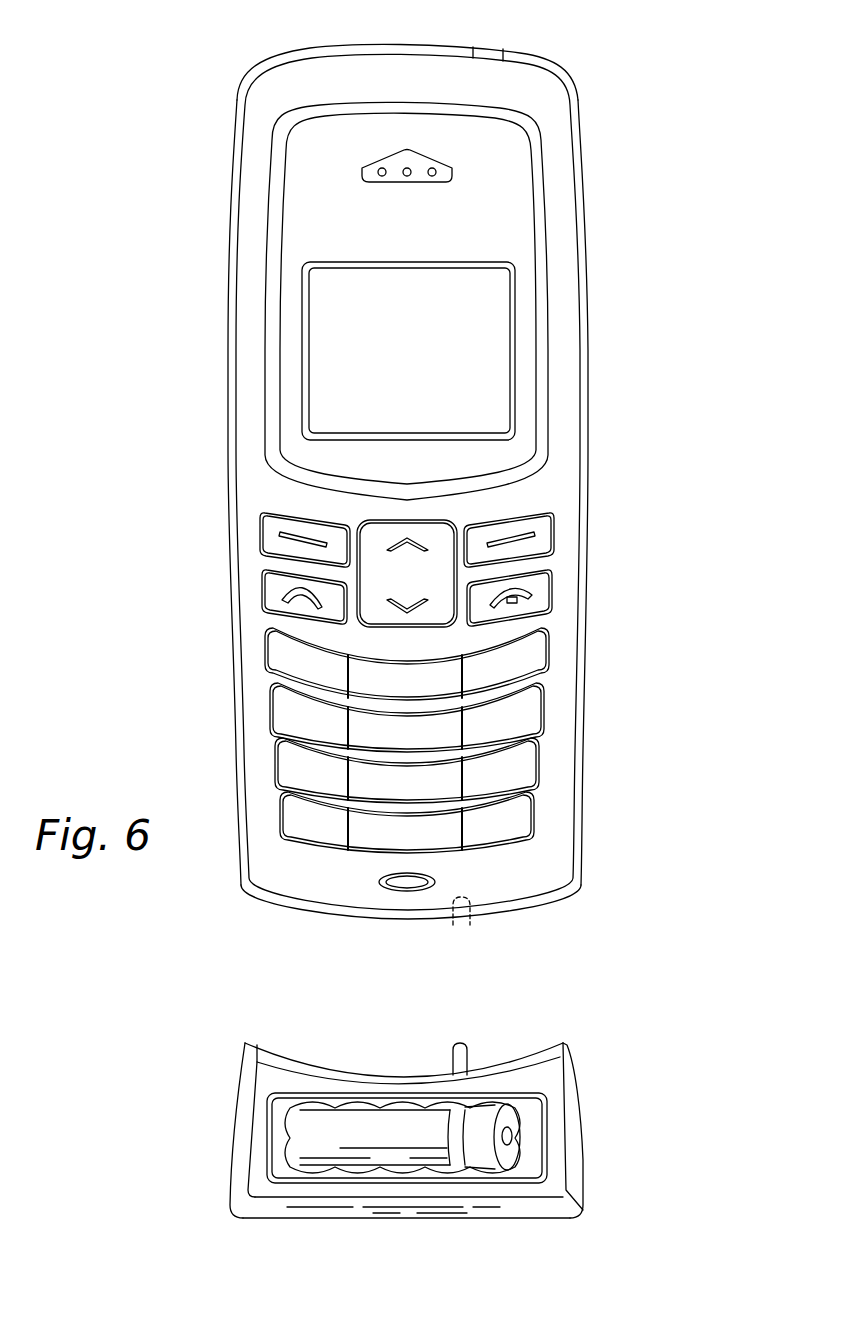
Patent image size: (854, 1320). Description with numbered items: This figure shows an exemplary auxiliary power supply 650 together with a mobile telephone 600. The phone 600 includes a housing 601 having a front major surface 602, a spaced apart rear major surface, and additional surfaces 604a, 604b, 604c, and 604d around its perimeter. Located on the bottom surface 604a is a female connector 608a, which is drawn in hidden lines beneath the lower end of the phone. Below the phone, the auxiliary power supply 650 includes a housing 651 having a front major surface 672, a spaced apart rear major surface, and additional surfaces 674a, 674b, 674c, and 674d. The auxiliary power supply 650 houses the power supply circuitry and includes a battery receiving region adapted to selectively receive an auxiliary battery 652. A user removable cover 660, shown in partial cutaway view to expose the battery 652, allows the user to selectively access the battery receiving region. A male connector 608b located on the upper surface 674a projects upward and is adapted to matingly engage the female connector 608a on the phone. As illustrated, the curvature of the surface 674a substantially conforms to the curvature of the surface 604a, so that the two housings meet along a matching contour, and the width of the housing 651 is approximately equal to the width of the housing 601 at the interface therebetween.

The mobile telephone 600 is at (150, 153).
The housing 601 is at (557, 123).
The front major surface 602 is at (498, 223).
The surface 604a is at (378, 925).
The surface 604b is at (229, 430).
The surface 604c is at (358, 43).
The surface 604d is at (588, 384).
The female connector 608a is at (470, 902).
The male connector 608b is at (463, 1053).
The auxiliary power supply 650 is at (642, 1058).
The housing 651 is at (567, 1072).
The auxiliary battery 652 is at (310, 1140).
The user removable cover 660 is at (283, 1127).
The front major surface 672 is at (517, 1190).
The surface 674a is at (318, 1065).
The surface 674b is at (573, 1147).
The surface 674c is at (347, 1203).
The surface 674d is at (237, 1147).